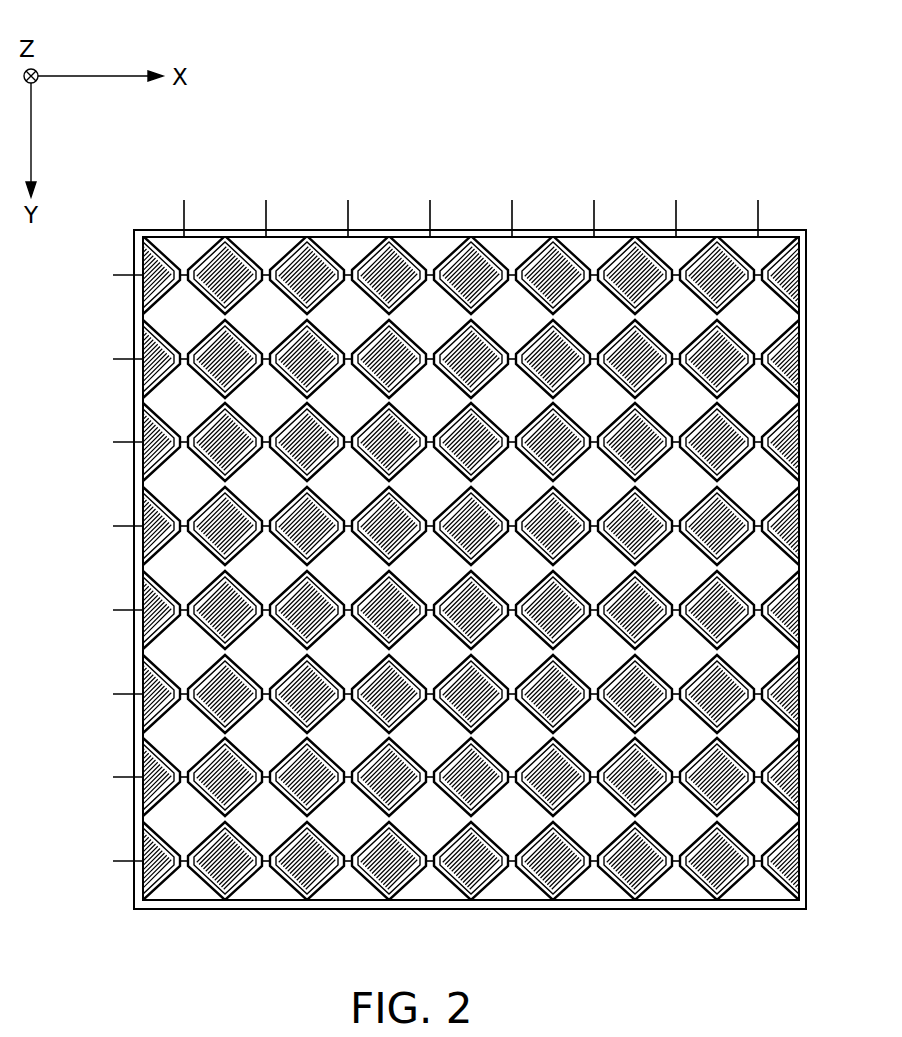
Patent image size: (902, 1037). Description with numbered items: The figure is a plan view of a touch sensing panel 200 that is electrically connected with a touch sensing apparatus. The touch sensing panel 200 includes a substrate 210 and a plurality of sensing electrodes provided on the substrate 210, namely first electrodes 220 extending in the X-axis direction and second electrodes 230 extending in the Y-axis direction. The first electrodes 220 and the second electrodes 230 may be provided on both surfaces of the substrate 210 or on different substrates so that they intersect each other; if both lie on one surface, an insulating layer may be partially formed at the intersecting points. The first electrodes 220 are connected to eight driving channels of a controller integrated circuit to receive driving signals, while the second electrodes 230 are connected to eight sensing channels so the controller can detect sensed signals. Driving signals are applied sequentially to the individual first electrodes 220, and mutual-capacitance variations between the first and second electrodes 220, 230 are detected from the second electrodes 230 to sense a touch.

The touch sensing panel 200 is at (578, 128).
The substrate 210 is at (139, 230).
The first electrodes 220 is at (142, 297).
The second electrodes 230 is at (200, 232).